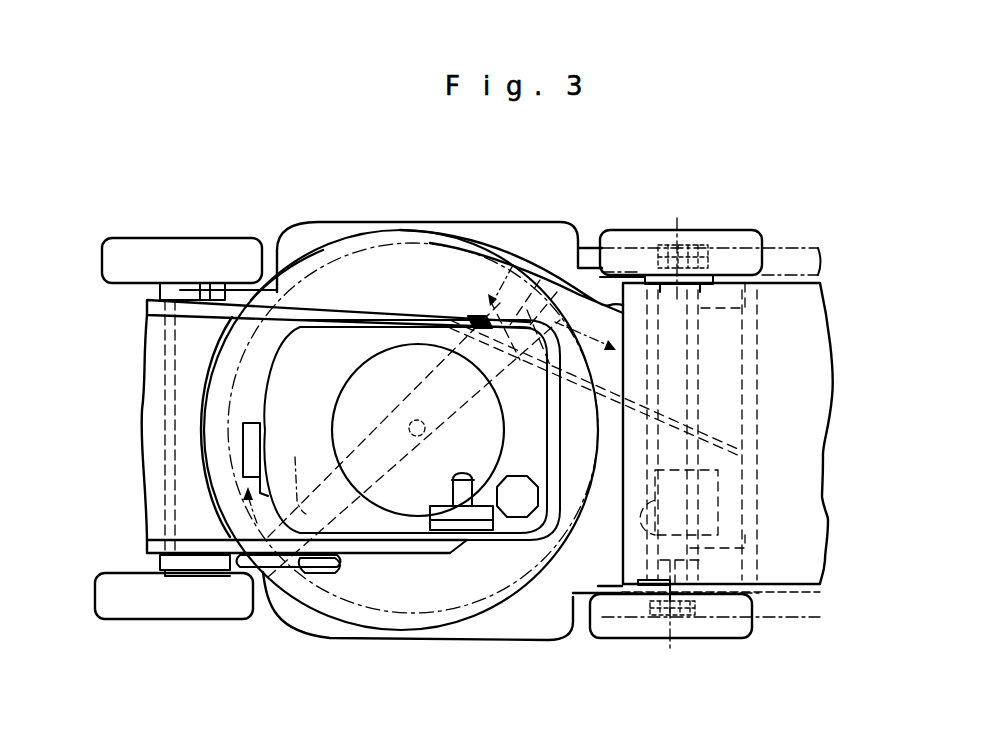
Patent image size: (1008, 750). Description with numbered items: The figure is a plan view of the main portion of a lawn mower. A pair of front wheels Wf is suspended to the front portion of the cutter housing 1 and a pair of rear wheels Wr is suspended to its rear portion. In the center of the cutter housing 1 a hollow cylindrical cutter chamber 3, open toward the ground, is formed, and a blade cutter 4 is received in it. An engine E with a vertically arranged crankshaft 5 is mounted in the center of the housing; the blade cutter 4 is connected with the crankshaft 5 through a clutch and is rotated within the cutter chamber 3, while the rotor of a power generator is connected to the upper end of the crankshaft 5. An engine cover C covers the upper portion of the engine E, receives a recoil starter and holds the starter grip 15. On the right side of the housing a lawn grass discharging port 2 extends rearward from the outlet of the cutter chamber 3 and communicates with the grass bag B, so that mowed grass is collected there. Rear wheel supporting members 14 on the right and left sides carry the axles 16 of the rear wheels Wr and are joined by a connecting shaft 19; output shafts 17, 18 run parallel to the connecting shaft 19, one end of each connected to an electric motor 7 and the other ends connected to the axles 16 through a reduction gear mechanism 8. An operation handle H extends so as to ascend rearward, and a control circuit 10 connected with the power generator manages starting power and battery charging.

The cutter housing 1 is at (145, 382).
The lawn grass discharging port 2 is at (580, 368).
The cutter chamber 3 is at (410, 258).
The blade cutter 4 is at (295, 471).
The crankshaft 5 is at (425, 423).
The electric motor 7 is at (715, 498).
The reduction gear mechanism 8 is at (710, 250).
The control circuit 10 is at (205, 307).
The rear wheel supporting member 14 is at (722, 290).
The starter grip 15 is at (447, 517).
The axle 16 is at (673, 275).
The output shaft 17 is at (700, 541).
The output shaft 18 is at (700, 361).
The connecting shaft 19 is at (655, 389).
The engine cover C is at (368, 377).
The engine E is at (247, 452).
The grass bag B is at (808, 440).
The operation handle H is at (802, 250).
The front wheel Wf is at (178, 252).
The rear wheel Wr is at (632, 235).